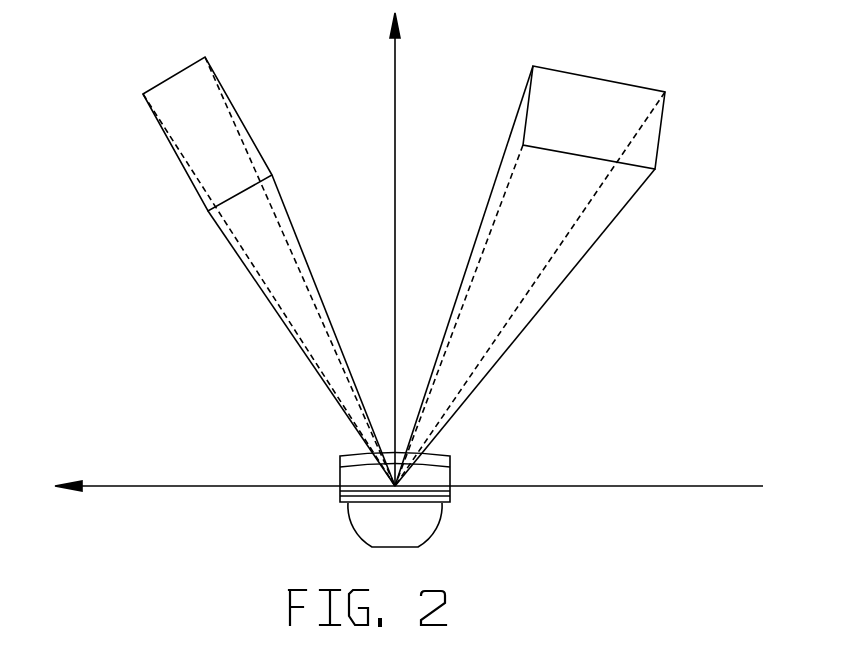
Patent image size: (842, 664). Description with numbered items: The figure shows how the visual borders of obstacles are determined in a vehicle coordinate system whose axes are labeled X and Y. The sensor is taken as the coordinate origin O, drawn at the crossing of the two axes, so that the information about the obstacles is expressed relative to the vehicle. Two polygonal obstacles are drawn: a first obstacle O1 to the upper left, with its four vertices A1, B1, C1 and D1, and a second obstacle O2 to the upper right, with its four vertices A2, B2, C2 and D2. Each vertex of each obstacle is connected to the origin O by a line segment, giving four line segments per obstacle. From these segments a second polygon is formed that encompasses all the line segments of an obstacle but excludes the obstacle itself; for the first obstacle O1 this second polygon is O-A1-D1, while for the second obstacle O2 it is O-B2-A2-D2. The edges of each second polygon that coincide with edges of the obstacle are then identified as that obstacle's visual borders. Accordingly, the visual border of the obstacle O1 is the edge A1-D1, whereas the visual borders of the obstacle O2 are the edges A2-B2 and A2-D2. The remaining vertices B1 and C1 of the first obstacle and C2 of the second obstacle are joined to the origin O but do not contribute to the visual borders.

The X axis X is at (408, 249).
The Y axis Y is at (409, 470).
The coordinate origin O is at (395, 500).
The obstacle O1 is at (207, 134).
The vertex of obstacle O1 A1 is at (288, 348).
The vertex of obstacle O1 B1 is at (251, 284).
The vertex of obstacle O1 C1 is at (296, 257).
The vertex of obstacle O1 D1 is at (333, 318).
The obstacle O2 is at (594, 117).
The vertex of obstacle O2 A2 is at (475, 315).
The vertex of obstacle O2 B2 is at (470, 263).
The vertex of obstacle O2 C2 is at (545, 276).
The vertex of obstacle O2 D2 is at (547, 325).